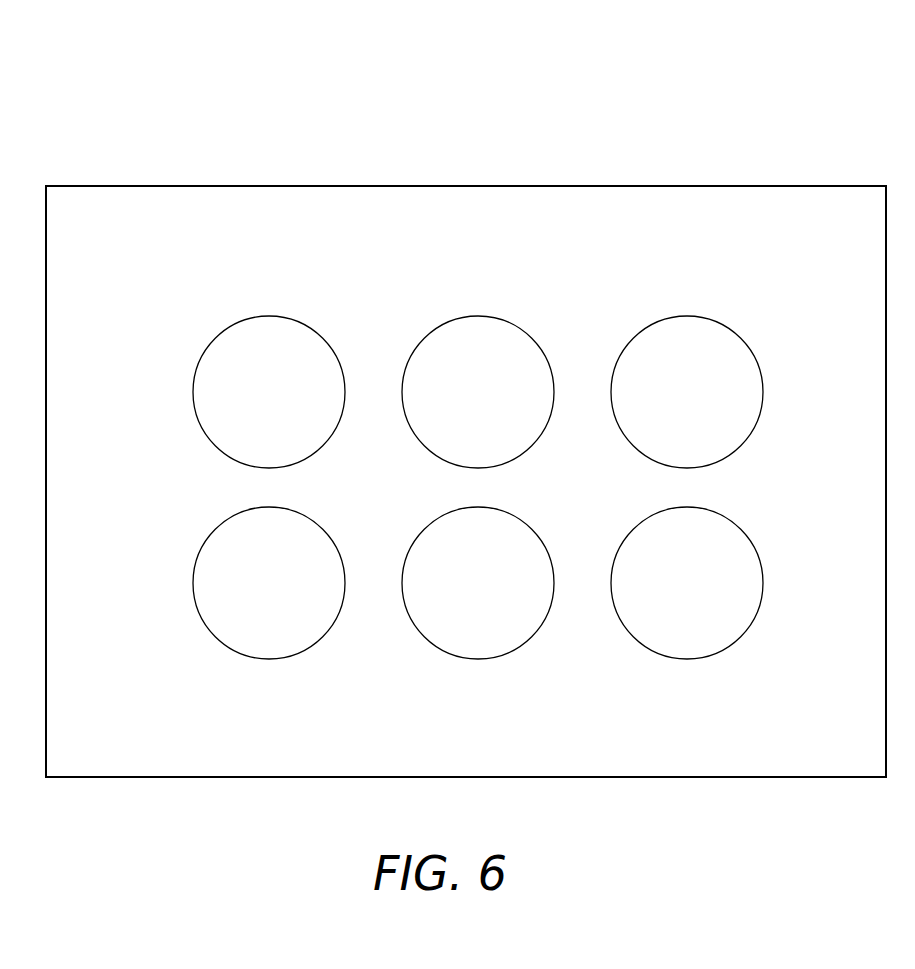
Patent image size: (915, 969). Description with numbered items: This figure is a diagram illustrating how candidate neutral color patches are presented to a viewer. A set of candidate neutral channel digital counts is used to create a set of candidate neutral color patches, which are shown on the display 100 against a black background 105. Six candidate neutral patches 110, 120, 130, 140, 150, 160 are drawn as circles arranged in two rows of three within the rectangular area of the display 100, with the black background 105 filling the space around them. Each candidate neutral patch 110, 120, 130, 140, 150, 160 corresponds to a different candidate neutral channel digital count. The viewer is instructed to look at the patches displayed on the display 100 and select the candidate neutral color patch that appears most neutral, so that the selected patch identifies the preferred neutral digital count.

The display 100 is at (150, 158).
The black background 105 is at (438, 213).
The candidate neutral patch 110 is at (285, 330).
The candidate neutral patch 120 is at (512, 343).
The candidate neutral patch 130 is at (723, 345).
The candidate neutral patch 140 is at (222, 628).
The candidate neutral patch 150 is at (520, 633).
The candidate neutral patch 160 is at (715, 633).